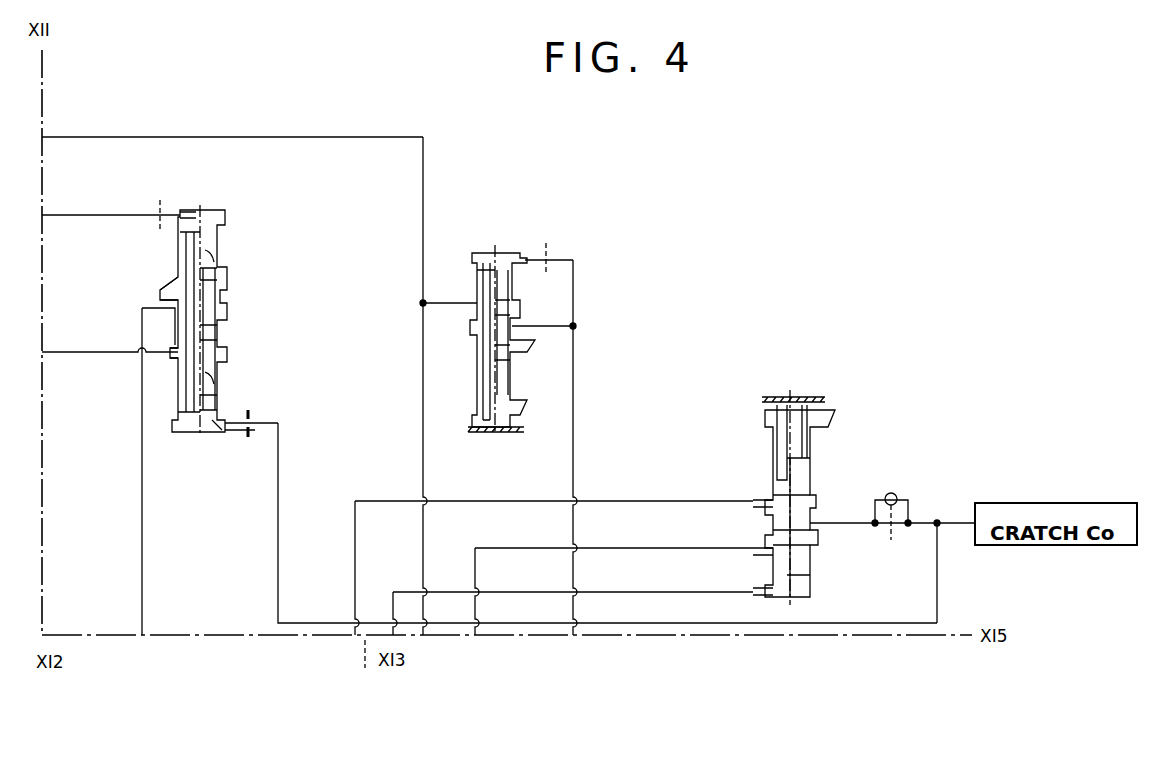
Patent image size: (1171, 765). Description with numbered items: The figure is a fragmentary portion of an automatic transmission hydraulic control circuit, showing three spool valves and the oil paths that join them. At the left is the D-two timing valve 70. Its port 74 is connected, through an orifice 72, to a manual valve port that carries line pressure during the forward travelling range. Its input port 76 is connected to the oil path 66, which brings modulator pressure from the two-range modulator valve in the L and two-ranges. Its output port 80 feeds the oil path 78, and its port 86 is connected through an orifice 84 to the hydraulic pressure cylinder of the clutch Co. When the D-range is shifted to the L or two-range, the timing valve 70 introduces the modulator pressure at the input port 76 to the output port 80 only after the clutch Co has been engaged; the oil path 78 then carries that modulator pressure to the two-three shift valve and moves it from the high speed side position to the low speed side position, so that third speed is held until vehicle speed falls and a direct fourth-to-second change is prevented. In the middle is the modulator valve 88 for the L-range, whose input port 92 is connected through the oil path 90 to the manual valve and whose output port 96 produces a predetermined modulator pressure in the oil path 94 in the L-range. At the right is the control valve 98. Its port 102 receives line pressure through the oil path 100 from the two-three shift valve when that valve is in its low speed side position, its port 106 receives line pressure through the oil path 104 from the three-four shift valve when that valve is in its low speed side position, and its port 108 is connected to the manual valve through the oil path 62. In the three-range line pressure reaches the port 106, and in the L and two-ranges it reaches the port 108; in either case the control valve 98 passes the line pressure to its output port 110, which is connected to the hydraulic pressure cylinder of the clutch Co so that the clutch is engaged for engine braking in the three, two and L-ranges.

The oil path 62 is at (640, 500).
The oil path 66 is at (102, 350).
The D-2 timing valve 70 is at (232, 212).
The orifice 72 is at (160, 208).
The port 74 is at (180, 212).
The input port 76 is at (178, 360).
The oil path 78 is at (150, 506).
The output port 80 is at (168, 300).
The orifice 84 is at (248, 424).
The port 86 is at (226, 436).
The modulator valve 88 is at (510, 250).
The oil path 90 is at (424, 212).
The input port 92 is at (478, 300).
The oil path 94 is at (576, 418).
The output port 96 is at (520, 328).
The control valve 98 is at (790, 394).
The oil path 100 is at (648, 592).
The port 102 is at (766, 600).
The oil path 104 is at (604, 547).
The port 106 is at (766, 546).
The port 108 is at (766, 498).
The output port 110 is at (822, 522).